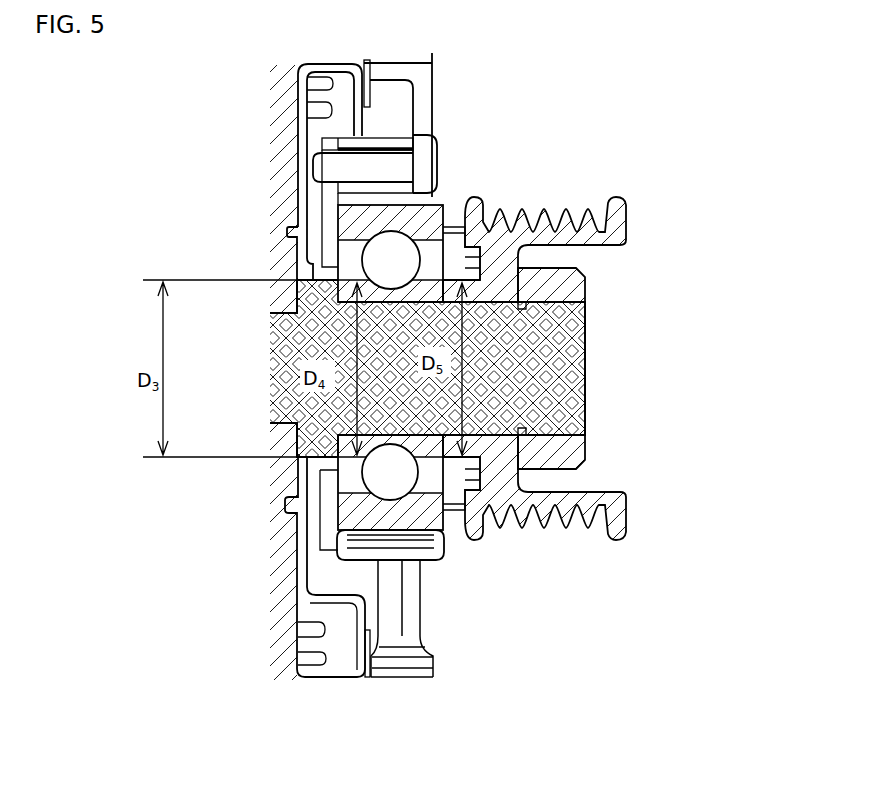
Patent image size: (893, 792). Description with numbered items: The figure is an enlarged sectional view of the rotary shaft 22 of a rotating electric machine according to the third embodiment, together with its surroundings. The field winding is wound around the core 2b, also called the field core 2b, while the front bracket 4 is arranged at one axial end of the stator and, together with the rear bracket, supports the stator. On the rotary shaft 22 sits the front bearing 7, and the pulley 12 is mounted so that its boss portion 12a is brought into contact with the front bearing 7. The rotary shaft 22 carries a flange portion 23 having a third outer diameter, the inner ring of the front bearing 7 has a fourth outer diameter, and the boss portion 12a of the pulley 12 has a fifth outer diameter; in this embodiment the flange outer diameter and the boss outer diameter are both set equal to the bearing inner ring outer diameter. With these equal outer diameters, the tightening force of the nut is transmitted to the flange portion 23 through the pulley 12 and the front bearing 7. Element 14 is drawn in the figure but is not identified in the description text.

The core 2b is at (280, 188).
The front bracket 4 is at (402, 76).
The front bearing 7 is at (422, 225).
The pulley 12 is at (610, 237).
The boss portion 12a is at (482, 295).
The shaft 14 is at (565, 450).
The rotary shaft 22 is at (432, 415).
The flange portion 23 is at (302, 437).